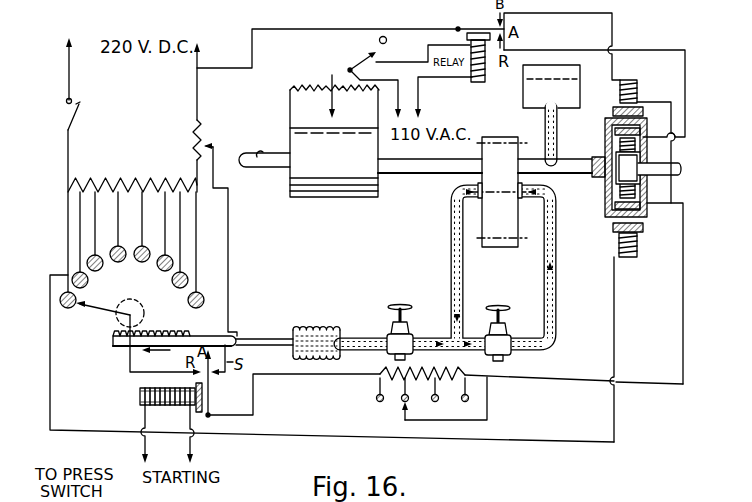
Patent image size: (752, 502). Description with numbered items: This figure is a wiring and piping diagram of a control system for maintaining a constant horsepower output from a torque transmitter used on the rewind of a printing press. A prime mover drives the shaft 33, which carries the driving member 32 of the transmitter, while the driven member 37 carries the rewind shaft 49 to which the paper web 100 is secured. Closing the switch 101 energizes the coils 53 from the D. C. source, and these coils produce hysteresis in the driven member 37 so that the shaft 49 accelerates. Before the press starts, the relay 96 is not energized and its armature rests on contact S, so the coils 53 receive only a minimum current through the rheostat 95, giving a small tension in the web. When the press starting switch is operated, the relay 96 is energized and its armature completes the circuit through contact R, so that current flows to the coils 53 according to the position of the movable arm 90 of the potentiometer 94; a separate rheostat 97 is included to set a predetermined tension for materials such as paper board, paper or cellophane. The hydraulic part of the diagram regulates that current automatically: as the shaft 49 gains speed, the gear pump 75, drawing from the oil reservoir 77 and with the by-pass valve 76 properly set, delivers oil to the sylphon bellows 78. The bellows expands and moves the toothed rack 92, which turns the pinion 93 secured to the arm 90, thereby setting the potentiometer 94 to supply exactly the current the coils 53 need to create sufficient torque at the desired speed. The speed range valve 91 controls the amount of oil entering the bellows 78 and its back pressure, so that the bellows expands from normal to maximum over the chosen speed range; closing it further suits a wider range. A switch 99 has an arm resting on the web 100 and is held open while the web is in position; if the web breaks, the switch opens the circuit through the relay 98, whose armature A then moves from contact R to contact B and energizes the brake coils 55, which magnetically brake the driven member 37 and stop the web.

The switch 101 is at (82, 117).
The rheostat 95 is at (207, 138).
The potentiometer 94 is at (152, 173).
The pinion 93 is at (132, 304).
The movable arm 90 is at (99, 306).
The toothed rack 92 is at (253, 337).
The sylphon bellows 78 is at (328, 328).
The speed range valve 91 is at (408, 335).
The by-pass valve 76 is at (508, 358).
The gear pump 75 is at (506, 248).
The shaft 49 is at (420, 175).
The paper web 100 is at (345, 190).
The switch 99 is at (379, 51).
The relay 98 is at (478, 68).
The oil reservoir 77 is at (577, 110).
The driven member 37 is at (604, 222).
The brake coils 55 is at (638, 84).
The coils 53 is at (645, 150).
The driving member 32 is at (640, 206).
The shaft 33 is at (682, 171).
The relay 96 is at (141, 423).
The rheostat 97 is at (391, 405).